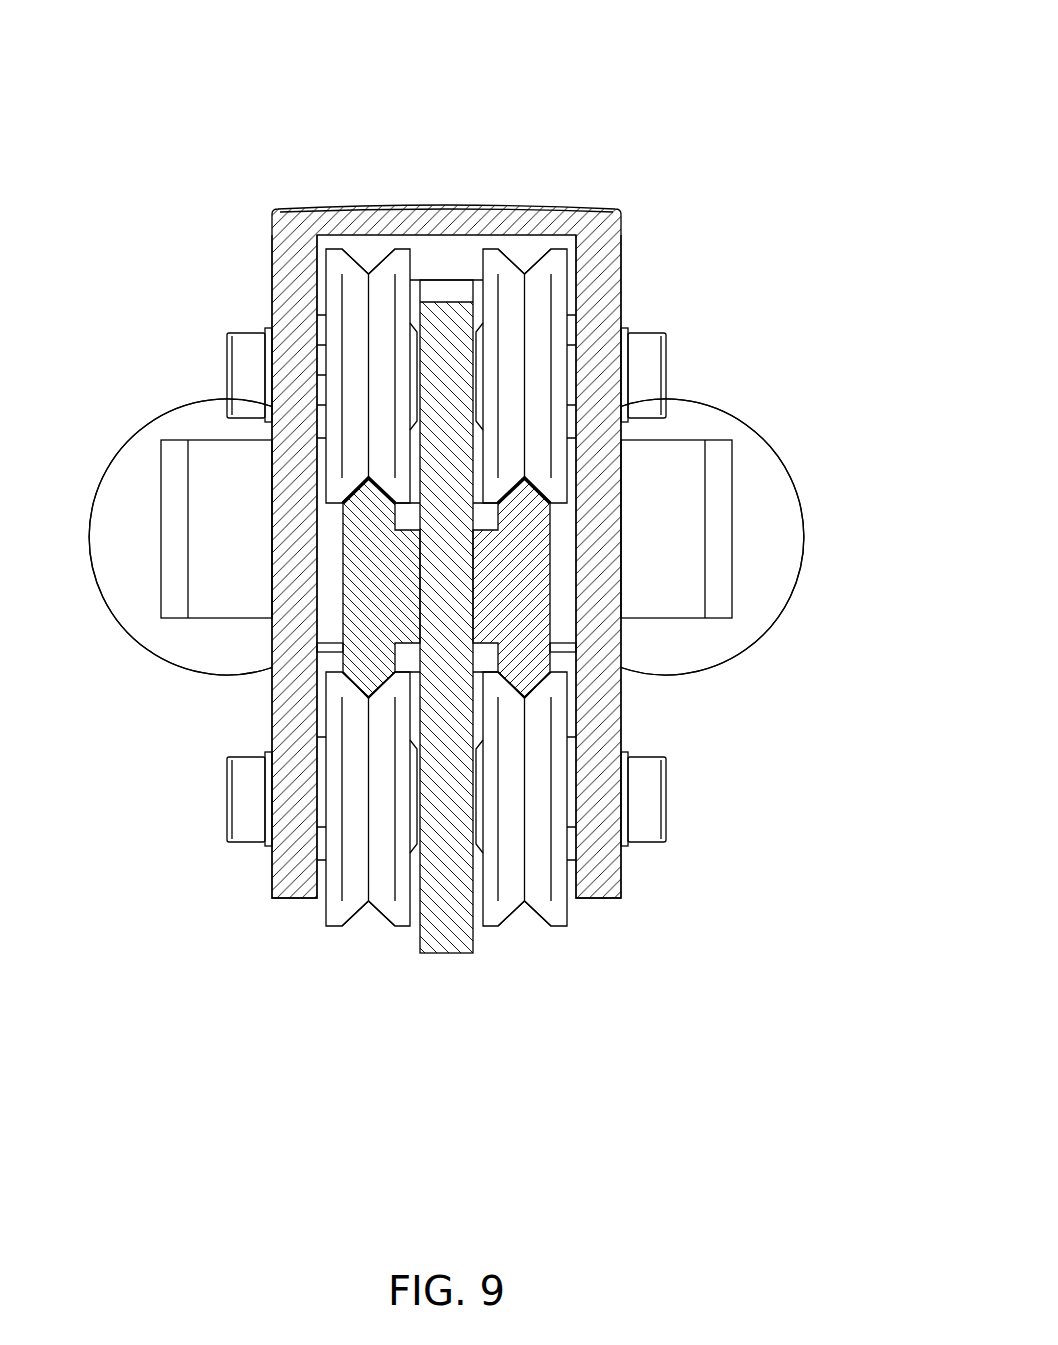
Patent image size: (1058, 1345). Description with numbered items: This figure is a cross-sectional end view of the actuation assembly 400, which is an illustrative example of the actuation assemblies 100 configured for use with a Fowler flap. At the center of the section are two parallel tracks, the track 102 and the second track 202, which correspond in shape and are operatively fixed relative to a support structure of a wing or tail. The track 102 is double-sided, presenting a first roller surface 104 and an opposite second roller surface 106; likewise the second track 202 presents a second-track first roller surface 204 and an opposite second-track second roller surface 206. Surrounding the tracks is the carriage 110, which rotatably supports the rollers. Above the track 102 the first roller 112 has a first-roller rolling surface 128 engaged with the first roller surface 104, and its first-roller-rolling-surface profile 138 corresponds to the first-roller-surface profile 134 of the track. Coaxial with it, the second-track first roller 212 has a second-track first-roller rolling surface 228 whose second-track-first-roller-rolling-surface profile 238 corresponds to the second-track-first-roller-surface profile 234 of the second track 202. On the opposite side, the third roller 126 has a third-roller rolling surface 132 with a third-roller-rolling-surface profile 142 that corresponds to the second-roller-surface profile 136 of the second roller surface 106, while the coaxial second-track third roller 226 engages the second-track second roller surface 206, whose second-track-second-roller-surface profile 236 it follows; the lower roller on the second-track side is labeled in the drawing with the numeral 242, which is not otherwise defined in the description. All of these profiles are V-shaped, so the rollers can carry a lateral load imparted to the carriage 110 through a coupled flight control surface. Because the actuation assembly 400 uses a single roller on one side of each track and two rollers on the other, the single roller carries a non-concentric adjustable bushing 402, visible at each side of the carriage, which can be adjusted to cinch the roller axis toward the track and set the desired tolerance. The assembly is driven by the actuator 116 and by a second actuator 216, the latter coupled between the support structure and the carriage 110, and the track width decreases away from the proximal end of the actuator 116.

The actuation assembly 100 is at (701, 46).
The actuation assembly 400 is at (673, 101).
The carriage 110 is at (297, 207).
The first roller 112 is at (313, 302).
The second-track first roller 212 is at (580, 302).
The third roller 126 is at (315, 880).
The second-track third roller 226 is at (578, 880).
The track 102 is at (330, 568).
The second track 202 is at (563, 568).
The first roller surface 104 is at (350, 486).
The second-track first roller surface 204 is at (543, 486).
The second roller surface 106 is at (354, 692).
The second-track second roller surface 206 is at (539, 692).
The actuator 116 is at (117, 453).
The second actuator 216 is at (776, 453).
The first-roller rolling surface 128 is at (357, 255).
The second-track first-roller rolling surface 228 is at (512, 255).
The first-roller-rolling-surface profile 138 is at (380, 260).
The second-track-first-roller-rolling-surface profile 238 is at (537, 260).
The first-roller-surface profile 134 is at (387, 484).
The second-track-first-roller-surface profile 234 is at (507, 484).
The third-roller rolling surface 132 is at (363, 919).
The second lower wheel 242 is at (531, 919).
The third-roller-rolling-surface profile 142 is at (382, 919).
The second-roller-surface profile 136 is at (381, 683).
The second-track-second-roller-surface profile 236 is at (512, 683).
The non-concentric adjustable bushing 402 is at (251, 330).